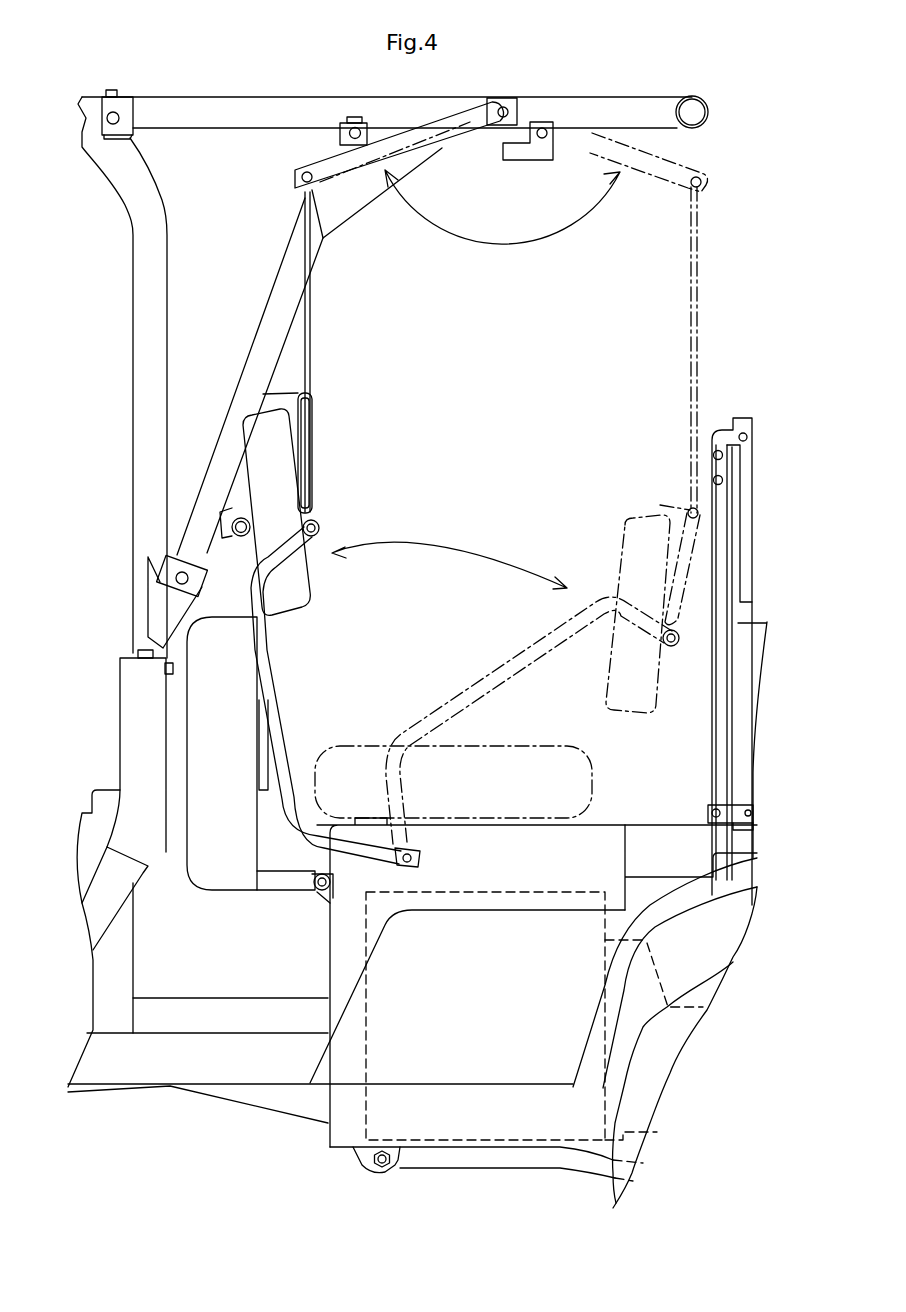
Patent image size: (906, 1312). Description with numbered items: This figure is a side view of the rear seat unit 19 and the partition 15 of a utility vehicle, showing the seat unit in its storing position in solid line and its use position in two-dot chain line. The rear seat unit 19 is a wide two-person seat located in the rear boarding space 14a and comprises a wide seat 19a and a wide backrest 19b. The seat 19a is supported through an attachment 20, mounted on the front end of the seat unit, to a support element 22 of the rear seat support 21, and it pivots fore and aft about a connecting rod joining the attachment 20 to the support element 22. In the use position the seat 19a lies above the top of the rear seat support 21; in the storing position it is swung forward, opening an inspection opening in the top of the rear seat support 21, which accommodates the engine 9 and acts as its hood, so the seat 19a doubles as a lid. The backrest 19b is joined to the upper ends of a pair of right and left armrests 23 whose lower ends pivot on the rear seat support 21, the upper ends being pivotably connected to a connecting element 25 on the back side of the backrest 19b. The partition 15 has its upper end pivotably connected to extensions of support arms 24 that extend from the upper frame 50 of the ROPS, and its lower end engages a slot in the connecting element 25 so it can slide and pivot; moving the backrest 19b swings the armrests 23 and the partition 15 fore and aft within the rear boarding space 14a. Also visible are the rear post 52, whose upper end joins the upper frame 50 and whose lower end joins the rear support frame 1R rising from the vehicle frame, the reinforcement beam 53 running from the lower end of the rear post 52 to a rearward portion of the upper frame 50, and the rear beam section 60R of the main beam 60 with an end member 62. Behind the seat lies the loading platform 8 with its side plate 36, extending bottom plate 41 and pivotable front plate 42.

The rear support frame 1R is at (130, 718).
The loading platform 8 is at (717, 623).
The engine 9 is at (470, 892).
The rear boarding space 14a is at (497, 389).
The partition 15 is at (313, 315).
The rear seat unit 19 is at (426, 693).
The seat 19a is at (200, 875).
The backrest 19b is at (312, 600).
The attachment 20 is at (273, 880).
The rear seat support 21 is at (473, 1063).
The support element 22 is at (323, 895).
The armrest 23 is at (280, 730).
The support arm 24 is at (455, 133).
The connecting element 25 is at (313, 465).
The side plate 36 is at (755, 620).
The extending bottom plate 41 is at (710, 737).
The front plate 42 is at (742, 488).
The upper frame 50 is at (703, 133).
The rear post 52 is at (135, 285).
The reinforcement beam 53 is at (262, 336).
The main beam 60 is at (387, 144).
The rear beam section 60R is at (214, 122).
The end cap 62 is at (708, 112).